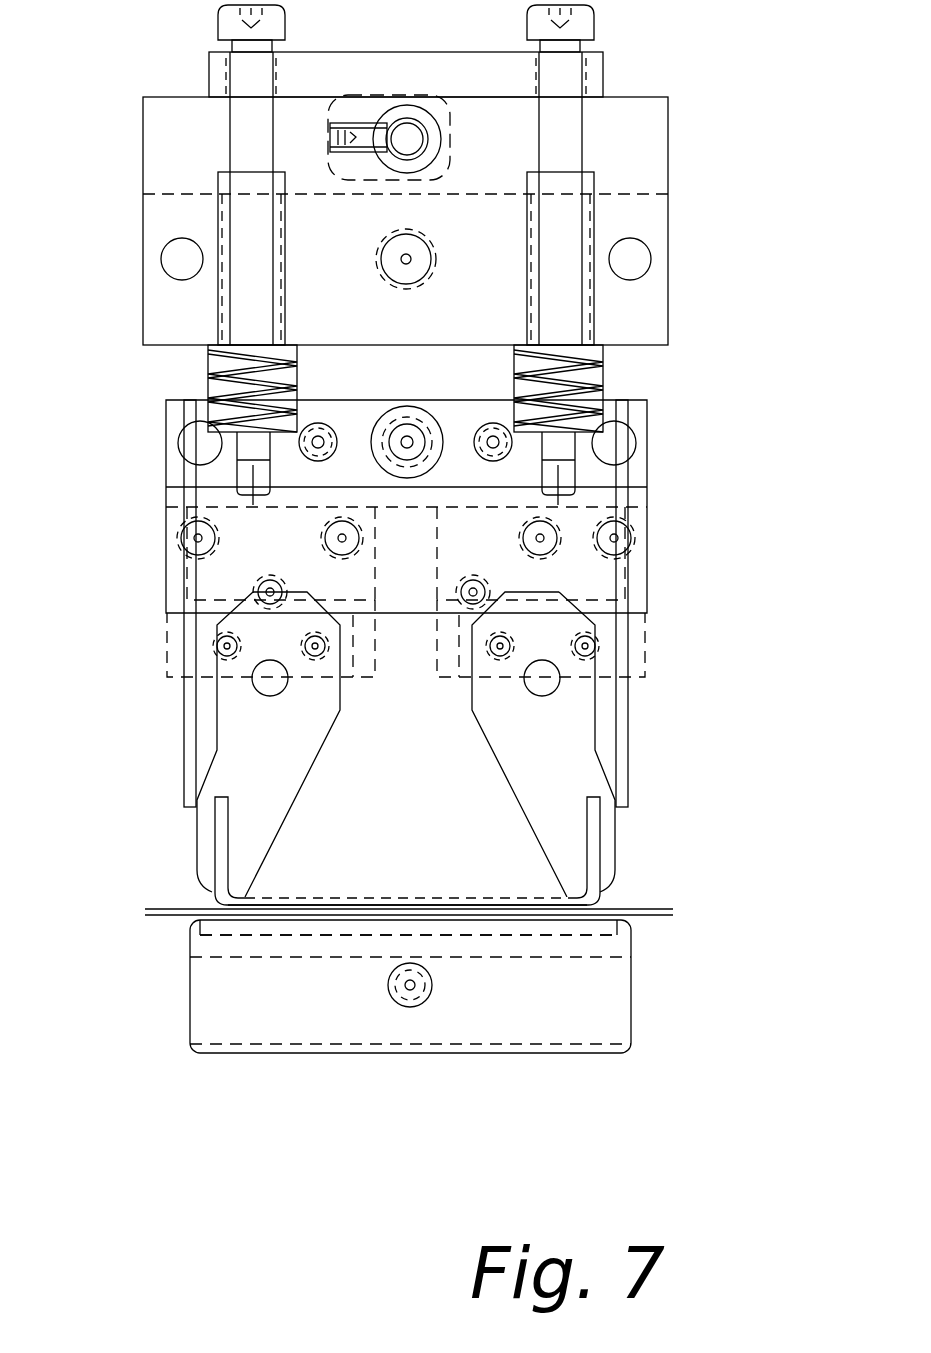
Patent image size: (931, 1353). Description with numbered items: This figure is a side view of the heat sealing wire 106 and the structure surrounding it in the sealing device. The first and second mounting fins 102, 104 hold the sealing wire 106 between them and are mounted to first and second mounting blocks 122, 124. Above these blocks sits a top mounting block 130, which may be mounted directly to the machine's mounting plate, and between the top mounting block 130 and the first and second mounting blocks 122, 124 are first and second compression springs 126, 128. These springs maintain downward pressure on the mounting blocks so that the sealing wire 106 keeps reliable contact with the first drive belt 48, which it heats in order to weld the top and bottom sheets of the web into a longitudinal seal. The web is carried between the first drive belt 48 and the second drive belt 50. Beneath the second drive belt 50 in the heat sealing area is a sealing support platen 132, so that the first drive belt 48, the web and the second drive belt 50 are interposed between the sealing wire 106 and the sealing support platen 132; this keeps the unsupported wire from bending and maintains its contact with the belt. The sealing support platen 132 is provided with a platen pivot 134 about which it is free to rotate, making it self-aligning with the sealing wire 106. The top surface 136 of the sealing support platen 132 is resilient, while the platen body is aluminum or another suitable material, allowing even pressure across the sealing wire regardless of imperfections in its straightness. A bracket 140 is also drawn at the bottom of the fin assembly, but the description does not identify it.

The top mounting block 130 is at (623, 207).
The first compression spring 126 is at (208, 363).
The second compression spring 128 is at (603, 372).
The first mounting block 122 is at (233, 567).
The second mounting block 124 is at (580, 578).
The first mounting fin 102 is at (250, 738).
The second mounting fin 104 is at (567, 738).
The sealing wire 106 is at (330, 907).
The U-shaped bracket 140 is at (602, 885).
The first drive belt 48 is at (168, 908).
The second drive belt 50 is at (157, 918).
The sealing support platen 132 is at (278, 1005).
The platen pivot 134 is at (410, 995).
The top surface 136 is at (607, 927).